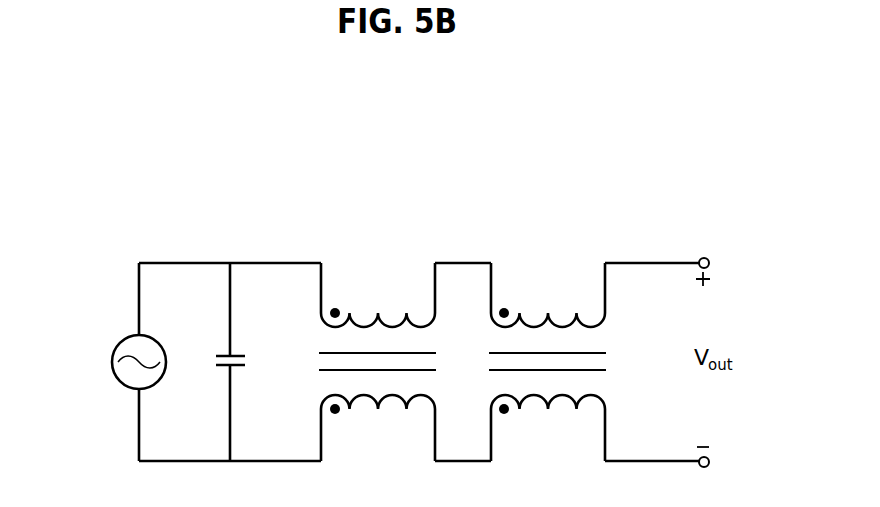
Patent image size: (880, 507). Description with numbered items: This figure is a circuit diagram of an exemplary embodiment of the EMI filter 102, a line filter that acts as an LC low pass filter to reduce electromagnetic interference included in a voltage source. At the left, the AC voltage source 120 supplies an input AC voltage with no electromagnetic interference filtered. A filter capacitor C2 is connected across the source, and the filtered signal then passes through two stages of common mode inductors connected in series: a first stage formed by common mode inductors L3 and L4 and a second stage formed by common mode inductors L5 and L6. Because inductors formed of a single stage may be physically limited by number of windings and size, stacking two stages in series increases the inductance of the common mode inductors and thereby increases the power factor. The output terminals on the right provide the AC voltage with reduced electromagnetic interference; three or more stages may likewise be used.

The AC voltage source 120 is at (123, 341).
The EMI filter 102 is at (579, 186).
The filter capacitor C2 is at (241, 362).
The common mode inductor L3 is at (378, 295).
The common mode inductor L4 is at (378, 428).
The common mode inductor L5 is at (548, 295).
The common mode inductor L6 is at (548, 428).